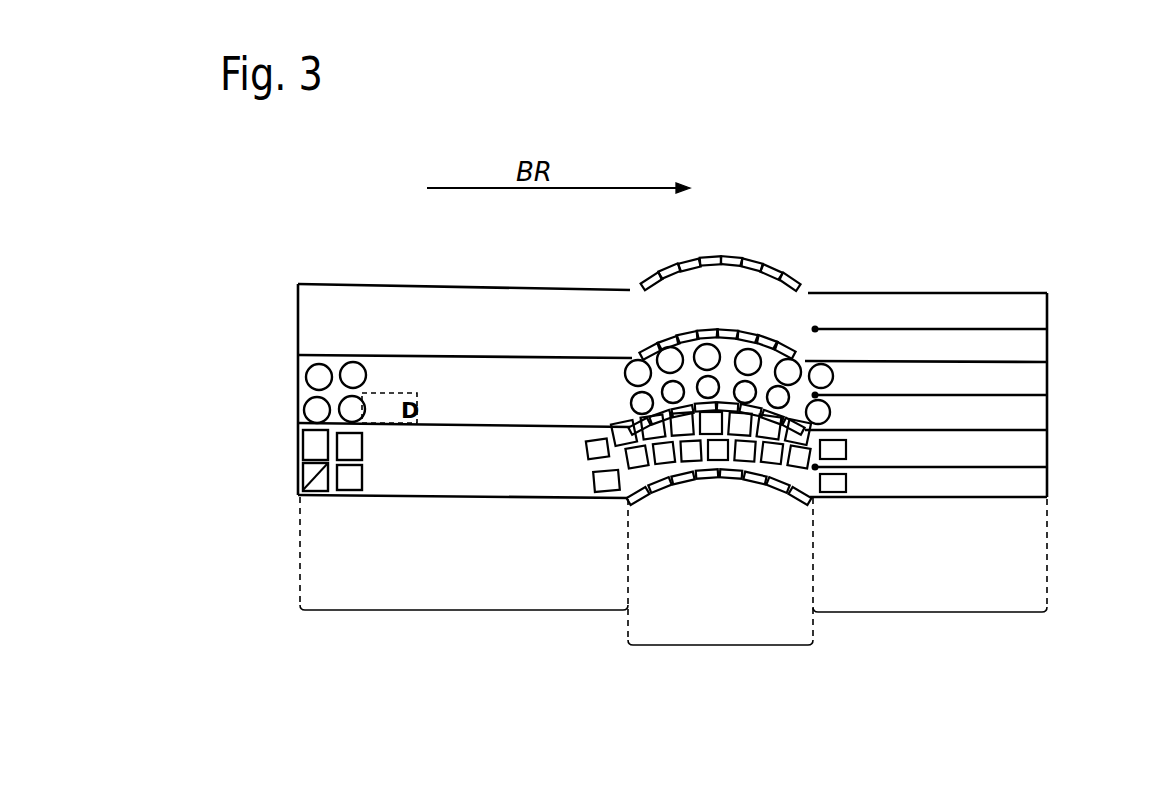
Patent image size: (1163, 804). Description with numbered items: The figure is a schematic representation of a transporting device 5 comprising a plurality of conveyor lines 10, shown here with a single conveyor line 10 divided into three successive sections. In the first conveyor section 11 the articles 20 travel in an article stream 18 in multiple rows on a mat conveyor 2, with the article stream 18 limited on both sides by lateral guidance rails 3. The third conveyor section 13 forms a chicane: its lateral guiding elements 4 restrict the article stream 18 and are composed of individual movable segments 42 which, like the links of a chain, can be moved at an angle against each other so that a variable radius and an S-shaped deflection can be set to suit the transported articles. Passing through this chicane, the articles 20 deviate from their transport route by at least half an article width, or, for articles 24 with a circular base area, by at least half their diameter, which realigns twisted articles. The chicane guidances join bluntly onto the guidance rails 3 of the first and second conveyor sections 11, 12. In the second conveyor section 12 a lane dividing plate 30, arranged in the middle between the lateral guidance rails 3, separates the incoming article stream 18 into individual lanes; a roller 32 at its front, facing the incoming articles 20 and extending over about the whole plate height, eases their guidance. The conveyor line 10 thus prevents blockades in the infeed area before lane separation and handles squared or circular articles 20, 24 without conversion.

The mat conveyor 2 is at (448, 339).
The lateral guidance rails 3 is at (322, 350).
The lateral guiding elements 4 is at (733, 330).
The transporting device 5 is at (532, 713).
The conveyor line 10 is at (1082, 331).
The first conveyor section 11 is at (463, 610).
The second conveyor section 12 is at (930, 612).
The third conveyor section 13 is at (720, 645).
The article stream 18 is at (302, 491).
The articles 20 is at (300, 434).
The articles with circular base area 24 is at (306, 376).
The lane dividing plate 30 is at (883, 327).
The roller 32 is at (815, 328).
The movable segments 42 is at (702, 262).